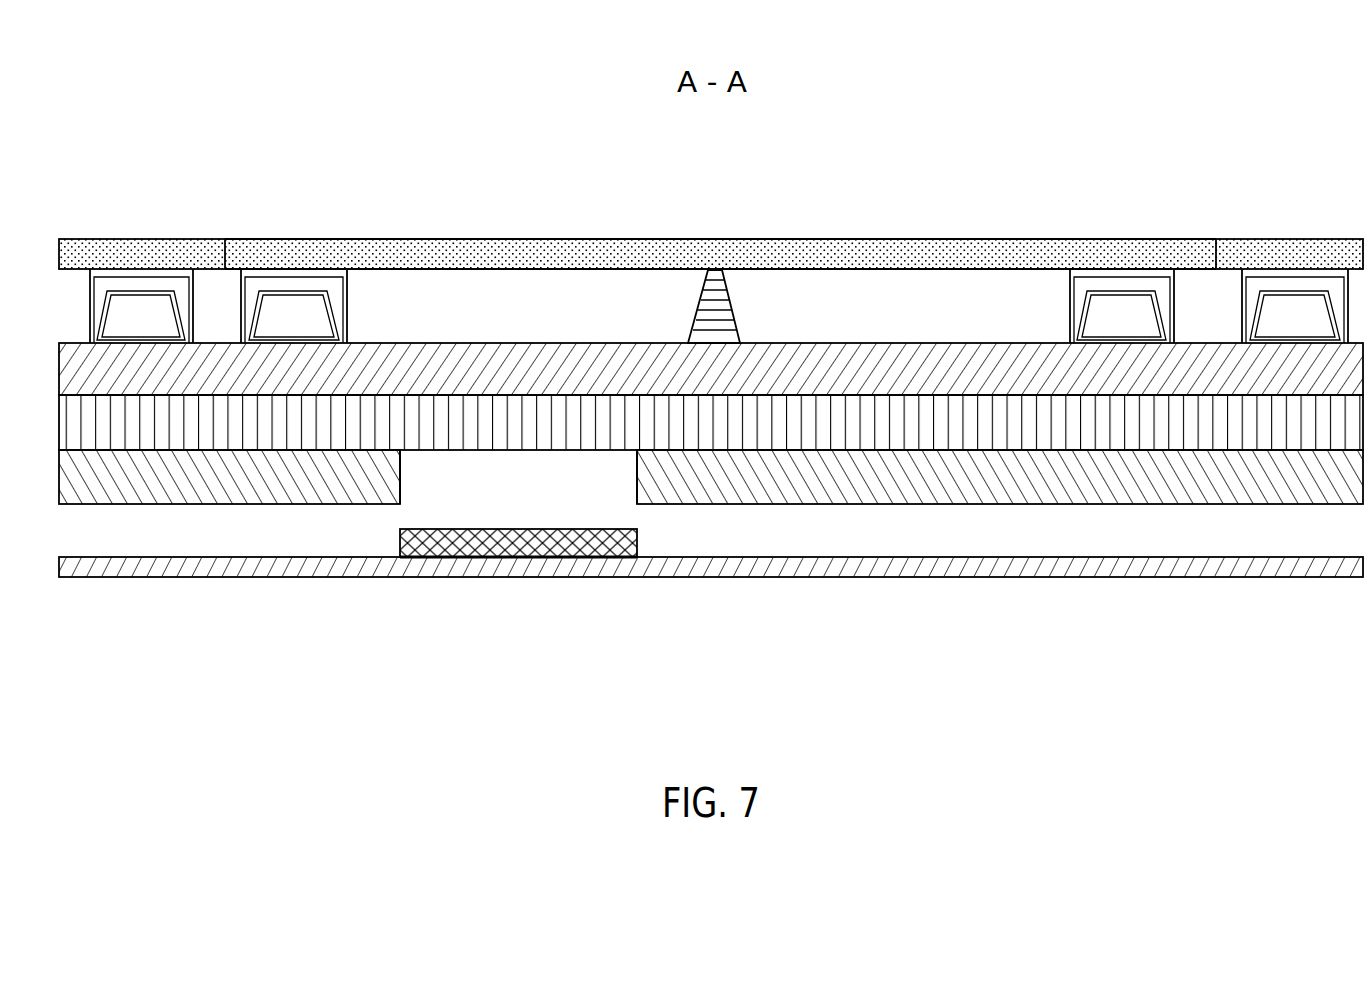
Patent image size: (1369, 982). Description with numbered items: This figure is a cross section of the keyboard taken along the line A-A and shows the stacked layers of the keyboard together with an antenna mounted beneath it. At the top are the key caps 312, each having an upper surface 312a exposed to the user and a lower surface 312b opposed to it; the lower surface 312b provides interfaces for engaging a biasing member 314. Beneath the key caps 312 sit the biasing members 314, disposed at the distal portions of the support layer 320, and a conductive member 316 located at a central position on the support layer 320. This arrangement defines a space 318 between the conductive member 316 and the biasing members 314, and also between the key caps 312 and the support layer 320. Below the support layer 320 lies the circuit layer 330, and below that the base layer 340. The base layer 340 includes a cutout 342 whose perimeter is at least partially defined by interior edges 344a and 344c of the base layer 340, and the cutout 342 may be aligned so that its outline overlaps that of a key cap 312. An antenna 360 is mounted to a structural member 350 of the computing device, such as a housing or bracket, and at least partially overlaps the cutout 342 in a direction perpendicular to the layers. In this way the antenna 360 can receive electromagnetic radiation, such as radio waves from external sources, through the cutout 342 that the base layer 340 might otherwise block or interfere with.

The key cap 312 is at (177, 250).
The upper surface 312a is at (927, 262).
The lower surface 312b is at (953, 263).
The biasing member 314 is at (1085, 292).
The conductive member 316 is at (705, 280).
The space 318 is at (533, 317).
The support layer 320 is at (1257, 370).
The circuit layer 330 is at (1132, 423).
The base layer 340 is at (208, 480).
The cutout 342 is at (533, 486).
The interior edge 344a is at (398, 502).
The interior edge 344c is at (645, 505).
The structural member 350 is at (588, 573).
The antenna 360 is at (478, 548).